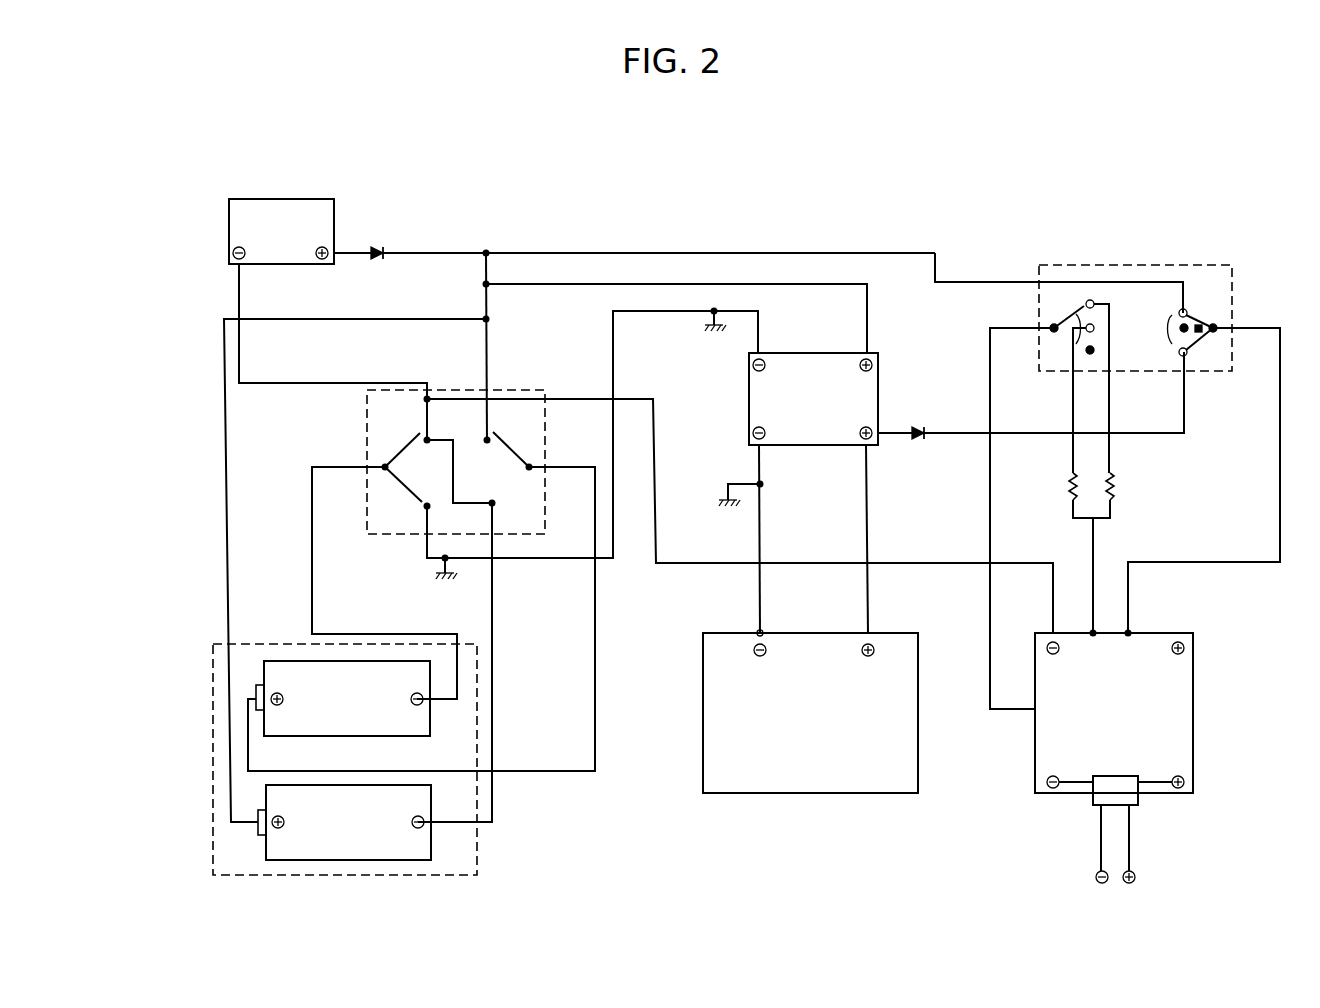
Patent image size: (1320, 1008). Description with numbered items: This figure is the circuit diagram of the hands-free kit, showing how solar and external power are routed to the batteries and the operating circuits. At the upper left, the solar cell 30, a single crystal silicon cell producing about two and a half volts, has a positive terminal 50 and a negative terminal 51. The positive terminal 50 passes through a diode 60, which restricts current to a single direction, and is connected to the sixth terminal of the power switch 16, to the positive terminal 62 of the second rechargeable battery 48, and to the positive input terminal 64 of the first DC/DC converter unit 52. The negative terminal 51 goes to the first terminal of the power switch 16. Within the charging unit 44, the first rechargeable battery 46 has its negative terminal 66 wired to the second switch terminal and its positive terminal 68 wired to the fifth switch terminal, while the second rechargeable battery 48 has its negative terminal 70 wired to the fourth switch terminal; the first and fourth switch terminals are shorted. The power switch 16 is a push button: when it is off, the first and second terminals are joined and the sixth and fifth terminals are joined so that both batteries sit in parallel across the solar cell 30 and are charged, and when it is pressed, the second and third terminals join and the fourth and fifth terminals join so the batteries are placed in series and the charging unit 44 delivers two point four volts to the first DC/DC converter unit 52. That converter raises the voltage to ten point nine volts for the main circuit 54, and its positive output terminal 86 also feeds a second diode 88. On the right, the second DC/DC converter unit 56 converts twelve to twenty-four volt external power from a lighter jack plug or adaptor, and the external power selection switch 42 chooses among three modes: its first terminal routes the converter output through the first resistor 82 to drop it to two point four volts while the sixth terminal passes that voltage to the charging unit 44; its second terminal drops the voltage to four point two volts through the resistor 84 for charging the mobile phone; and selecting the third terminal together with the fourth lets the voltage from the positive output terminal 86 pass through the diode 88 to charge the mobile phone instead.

The solar cell 30 is at (306, 205).
The negative terminal 51 is at (233, 250).
The positive terminal 50 is at (328, 258).
The diode 60 is at (388, 218).
The power switch 16 is at (366, 413).
The first DC/DC converter unit 52 is at (805, 362).
The positive input terminal 64 is at (873, 355).
The positive output terminal 86 is at (872, 437).
The diode 88 is at (920, 397).
The external power selection switch 42 is at (1187, 265).
The first resistor 82 is at (1150, 485).
The resistor 84 is at (1042, 495).
The second DC/DC converter unit 56 is at (1182, 733).
The main circuit 54 is at (819, 775).
The charging unit 44 is at (350, 754).
The first rechargeable battery 46 is at (283, 667).
The second rechargeable battery 48 is at (273, 845).
The positive terminal 68 is at (256, 688).
The positive terminal 62 is at (258, 812).
The negative terminal 66 is at (421, 704).
The negative terminal 70 is at (418, 830).